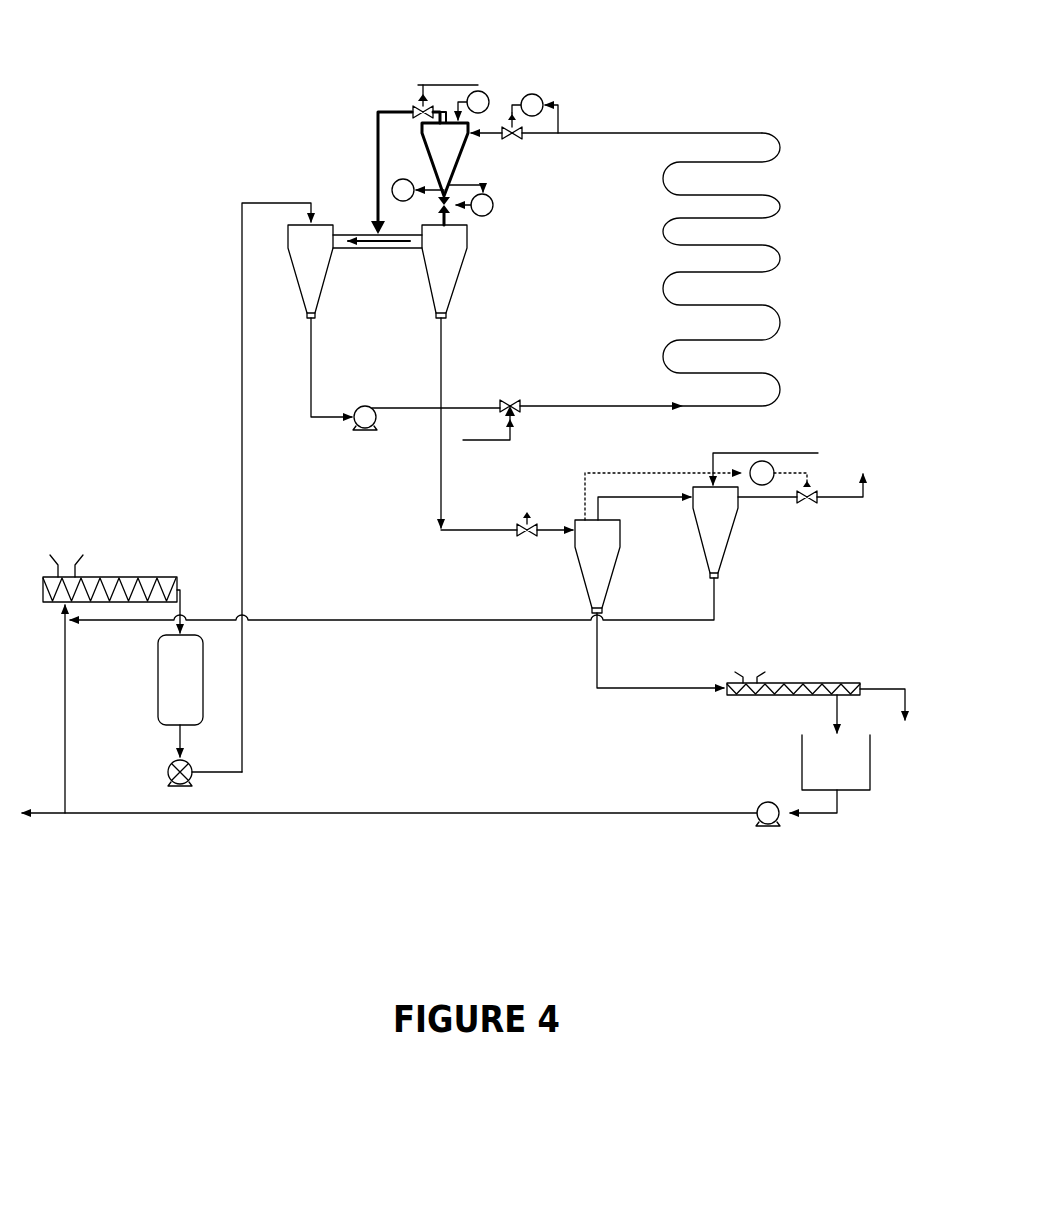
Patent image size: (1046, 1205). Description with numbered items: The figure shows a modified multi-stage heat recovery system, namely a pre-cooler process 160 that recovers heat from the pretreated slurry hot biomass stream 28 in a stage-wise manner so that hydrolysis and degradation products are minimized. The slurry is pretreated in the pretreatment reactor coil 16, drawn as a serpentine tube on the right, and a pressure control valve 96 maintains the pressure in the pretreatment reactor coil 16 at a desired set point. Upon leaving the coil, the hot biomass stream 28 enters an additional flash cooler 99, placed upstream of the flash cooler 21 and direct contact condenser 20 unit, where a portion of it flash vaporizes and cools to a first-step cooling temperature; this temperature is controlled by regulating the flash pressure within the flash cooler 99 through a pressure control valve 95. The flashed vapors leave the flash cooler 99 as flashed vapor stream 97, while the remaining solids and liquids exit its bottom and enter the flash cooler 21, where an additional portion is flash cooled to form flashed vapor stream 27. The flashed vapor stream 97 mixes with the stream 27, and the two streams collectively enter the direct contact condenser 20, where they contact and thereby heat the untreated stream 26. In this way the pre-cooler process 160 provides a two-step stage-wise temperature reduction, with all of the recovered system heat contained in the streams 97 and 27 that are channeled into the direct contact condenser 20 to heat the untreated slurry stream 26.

The pre-cooler process 160 is at (108, 209).
The pretreatment reactor coil 16 is at (782, 149).
The direct contact condenser 20 is at (322, 299).
The flash cooler 21 is at (453, 299).
The untreated stream 26 is at (243, 278).
The flashed vapor stream 27 is at (365, 233).
The pretreated slurry hot biomass stream 28 is at (660, 131).
The pressure control valve 95 is at (419, 85).
The pressure control valve 96 is at (543, 98).
The flashed vapor stream 97 is at (396, 111).
The flash cooler 99 is at (471, 142).